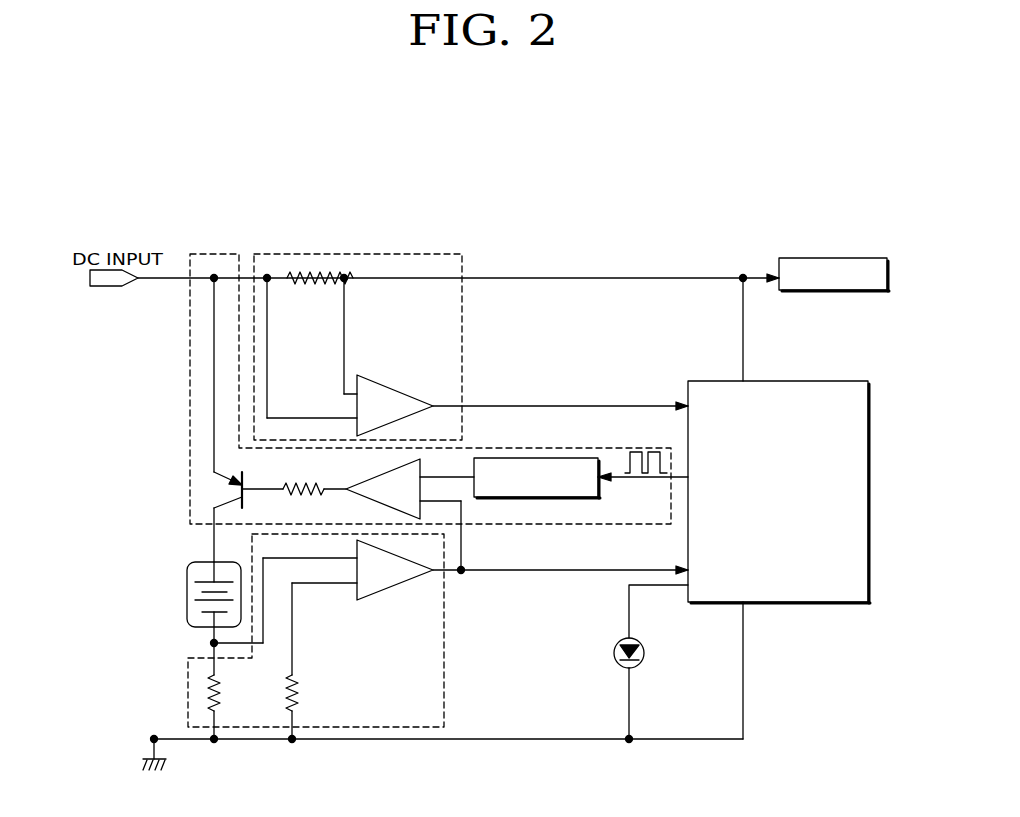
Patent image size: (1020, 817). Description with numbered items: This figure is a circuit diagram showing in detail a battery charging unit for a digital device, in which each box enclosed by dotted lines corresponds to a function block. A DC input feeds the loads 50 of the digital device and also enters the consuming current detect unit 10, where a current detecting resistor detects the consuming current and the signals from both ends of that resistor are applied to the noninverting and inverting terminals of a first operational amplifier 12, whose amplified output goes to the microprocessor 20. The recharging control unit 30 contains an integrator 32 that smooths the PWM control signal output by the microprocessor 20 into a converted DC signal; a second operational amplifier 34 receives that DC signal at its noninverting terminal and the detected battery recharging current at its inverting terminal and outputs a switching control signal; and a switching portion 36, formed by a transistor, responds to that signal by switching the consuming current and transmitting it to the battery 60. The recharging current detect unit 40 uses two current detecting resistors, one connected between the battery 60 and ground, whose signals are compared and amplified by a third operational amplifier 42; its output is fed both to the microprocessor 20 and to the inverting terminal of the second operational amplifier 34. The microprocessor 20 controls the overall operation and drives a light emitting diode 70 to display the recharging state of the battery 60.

The consuming current detect unit 10 is at (471, 301).
The first operational amplifier 12 is at (408, 397).
The microprocessor 20 is at (775, 381).
The recharging control unit 30 is at (395, 366).
The integrator 32 is at (535, 458).
The second operational amplifier 34 is at (370, 479).
The switching portion 36 is at (213, 507).
The recharging current detect unit 40 is at (366, 636).
The third operational amplifier 42 is at (406, 583).
The loads 50 is at (832, 258).
The battery 60 is at (187, 592).
The light emitting diode 70 is at (614, 652).